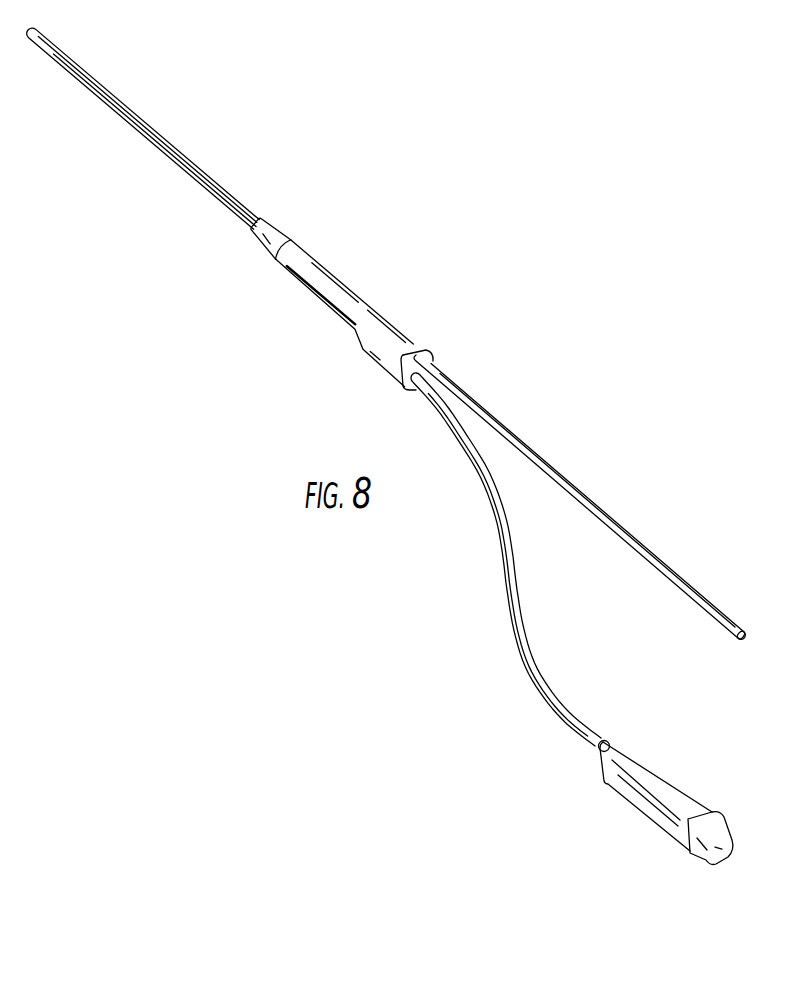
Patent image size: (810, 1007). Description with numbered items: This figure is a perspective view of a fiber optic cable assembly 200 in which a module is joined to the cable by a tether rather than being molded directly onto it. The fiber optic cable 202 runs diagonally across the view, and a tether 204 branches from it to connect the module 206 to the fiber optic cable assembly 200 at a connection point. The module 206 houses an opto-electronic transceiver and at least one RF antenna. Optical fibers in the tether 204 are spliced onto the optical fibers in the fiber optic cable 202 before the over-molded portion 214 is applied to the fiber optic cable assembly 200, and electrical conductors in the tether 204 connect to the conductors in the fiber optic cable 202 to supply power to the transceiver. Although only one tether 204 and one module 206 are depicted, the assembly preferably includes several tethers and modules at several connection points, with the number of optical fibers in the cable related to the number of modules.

The fiber optic cable assembly 200 is at (526, 232).
The fiber optic cable 202 is at (599, 508).
The tether 204 is at (530, 647).
The module 206 is at (679, 782).
The over-molded portion 214 is at (408, 336).